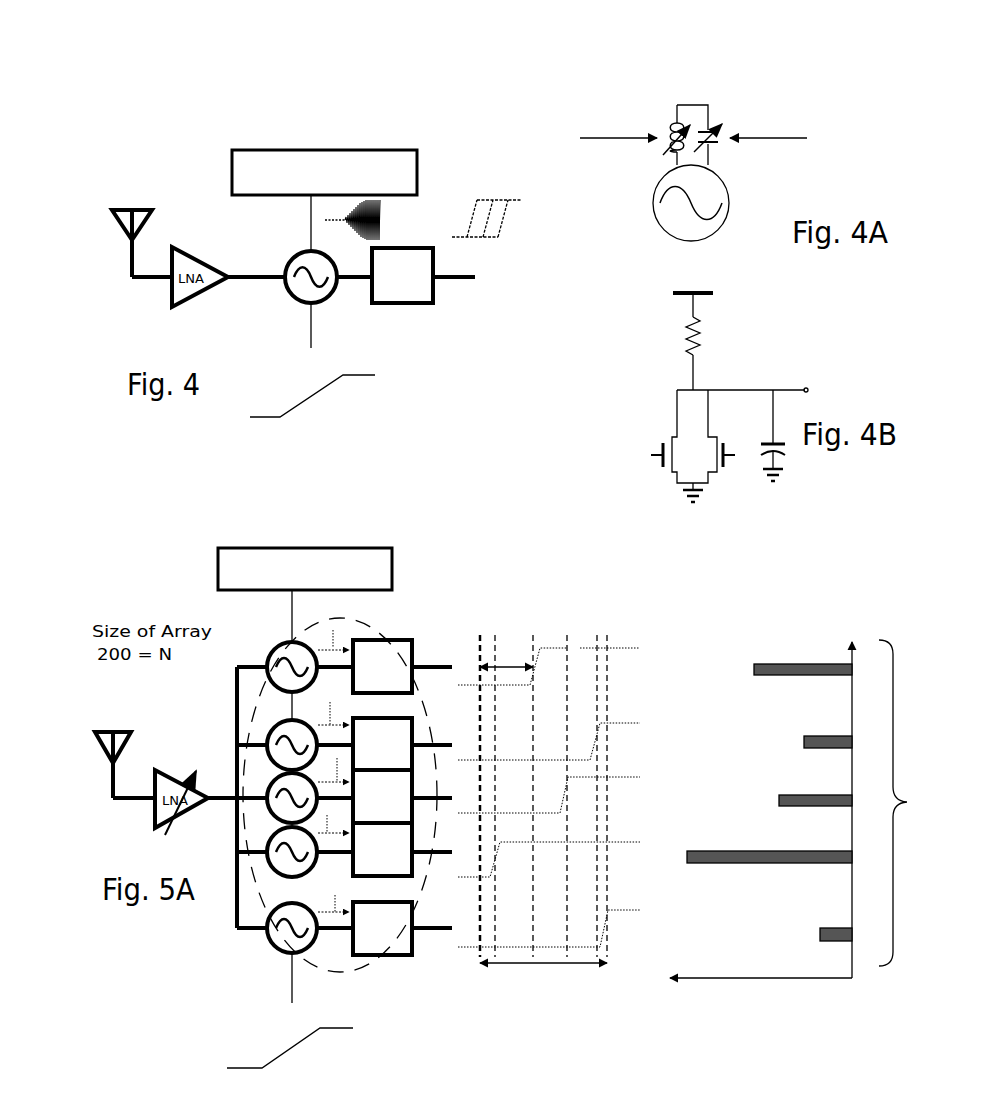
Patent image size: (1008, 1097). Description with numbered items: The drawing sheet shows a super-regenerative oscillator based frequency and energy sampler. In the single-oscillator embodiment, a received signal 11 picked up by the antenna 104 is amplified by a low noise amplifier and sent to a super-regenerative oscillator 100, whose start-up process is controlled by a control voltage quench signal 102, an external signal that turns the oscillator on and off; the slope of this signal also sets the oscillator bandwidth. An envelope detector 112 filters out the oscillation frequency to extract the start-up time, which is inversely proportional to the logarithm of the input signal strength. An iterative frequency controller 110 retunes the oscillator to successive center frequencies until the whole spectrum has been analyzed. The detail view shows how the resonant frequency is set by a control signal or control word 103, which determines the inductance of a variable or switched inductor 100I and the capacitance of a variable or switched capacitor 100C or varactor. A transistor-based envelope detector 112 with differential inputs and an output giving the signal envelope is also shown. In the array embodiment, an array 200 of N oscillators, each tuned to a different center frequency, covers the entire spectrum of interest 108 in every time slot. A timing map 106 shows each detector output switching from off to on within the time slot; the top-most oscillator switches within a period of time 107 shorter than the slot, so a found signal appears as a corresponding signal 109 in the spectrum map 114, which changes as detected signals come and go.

In FIG. 4, the received signal 11 is at (119, 255).
In FIG. 5A, the received signal 11 is at (101, 778).
In FIG. 4, the antenna 104 is at (149, 243).
In FIG. 5A, the antenna 104 is at (129, 764).
In FIG. 4, the iterative frequency controller 110 is at (417, 171).
In FIG. 5A, the iterative frequency controller 110 is at (392, 571).
In FIG. 4, the super-regenerative oscillator 100 is at (319, 302).
In FIG. 4A, the super-regenerative oscillator 100 is at (707, 237).
In FIG. 5A, the super-regenerative oscillator 100 is at (270, 943).
In FIG. 4, the Vctrl signal 102 is at (311, 340).
In FIG. 5A, the Vctrl signal 102 is at (292, 974).
In FIG. 4, the envelope detector 112 is at (415, 303).
In FIG. 4B, the envelope detector 112 is at (721, 397).
In FIG. 5A, the envelope detector 112 is at (405, 955).
In FIG. 4A, the control signal or control word 103 is at (620, 138).
In FIG. 4A, the variable/switched inductor 100I is at (637, 106).
In FIG. 4A, the switched capacitor 100C is at (776, 105).
In FIG. 5A, the SRO array 200 is at (304, 625).
In FIG. 5A, the timing map 106 is at (601, 992).
In FIG. 5A, the period of time 107 is at (506, 662).
In FIG. 5A, the spectrum of interest 108 is at (918, 803).
In FIG. 5A, the corresponding signal 109 is at (780, 663).
In FIG. 5A, the spectrum map 114 is at (813, 816).